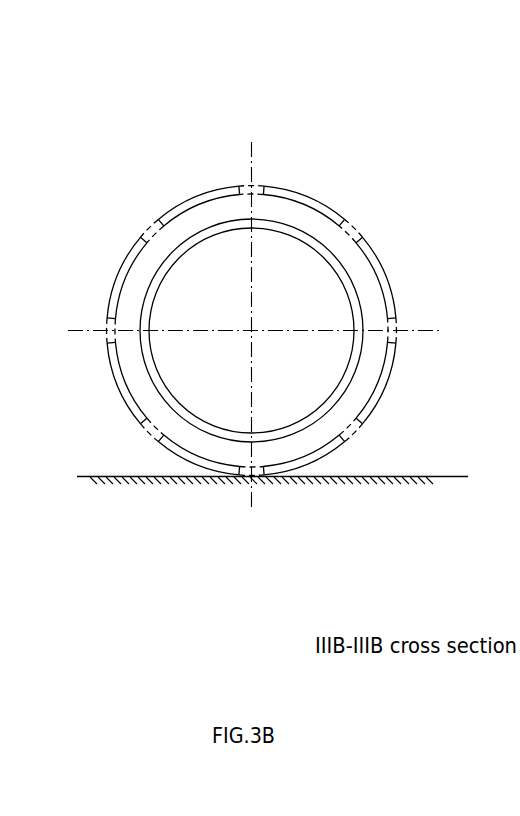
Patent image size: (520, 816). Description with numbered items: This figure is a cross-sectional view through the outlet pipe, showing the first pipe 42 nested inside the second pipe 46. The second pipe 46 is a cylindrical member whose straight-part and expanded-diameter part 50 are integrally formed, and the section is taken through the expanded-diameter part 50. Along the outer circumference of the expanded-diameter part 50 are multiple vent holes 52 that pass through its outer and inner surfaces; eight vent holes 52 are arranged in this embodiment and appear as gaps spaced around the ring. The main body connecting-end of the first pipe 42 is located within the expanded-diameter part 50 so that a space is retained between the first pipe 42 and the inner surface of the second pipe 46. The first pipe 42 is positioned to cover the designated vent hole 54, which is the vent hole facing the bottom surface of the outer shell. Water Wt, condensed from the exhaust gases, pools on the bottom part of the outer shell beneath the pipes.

The first pipe 42 is at (358, 370).
The second pipe 46 is at (251, 259).
The expanded-diameter part 50 is at (198, 195).
The vent holes 52 is at (104, 322).
The designated vent hole 54 is at (243, 485).
The water Wt is at (385, 478).